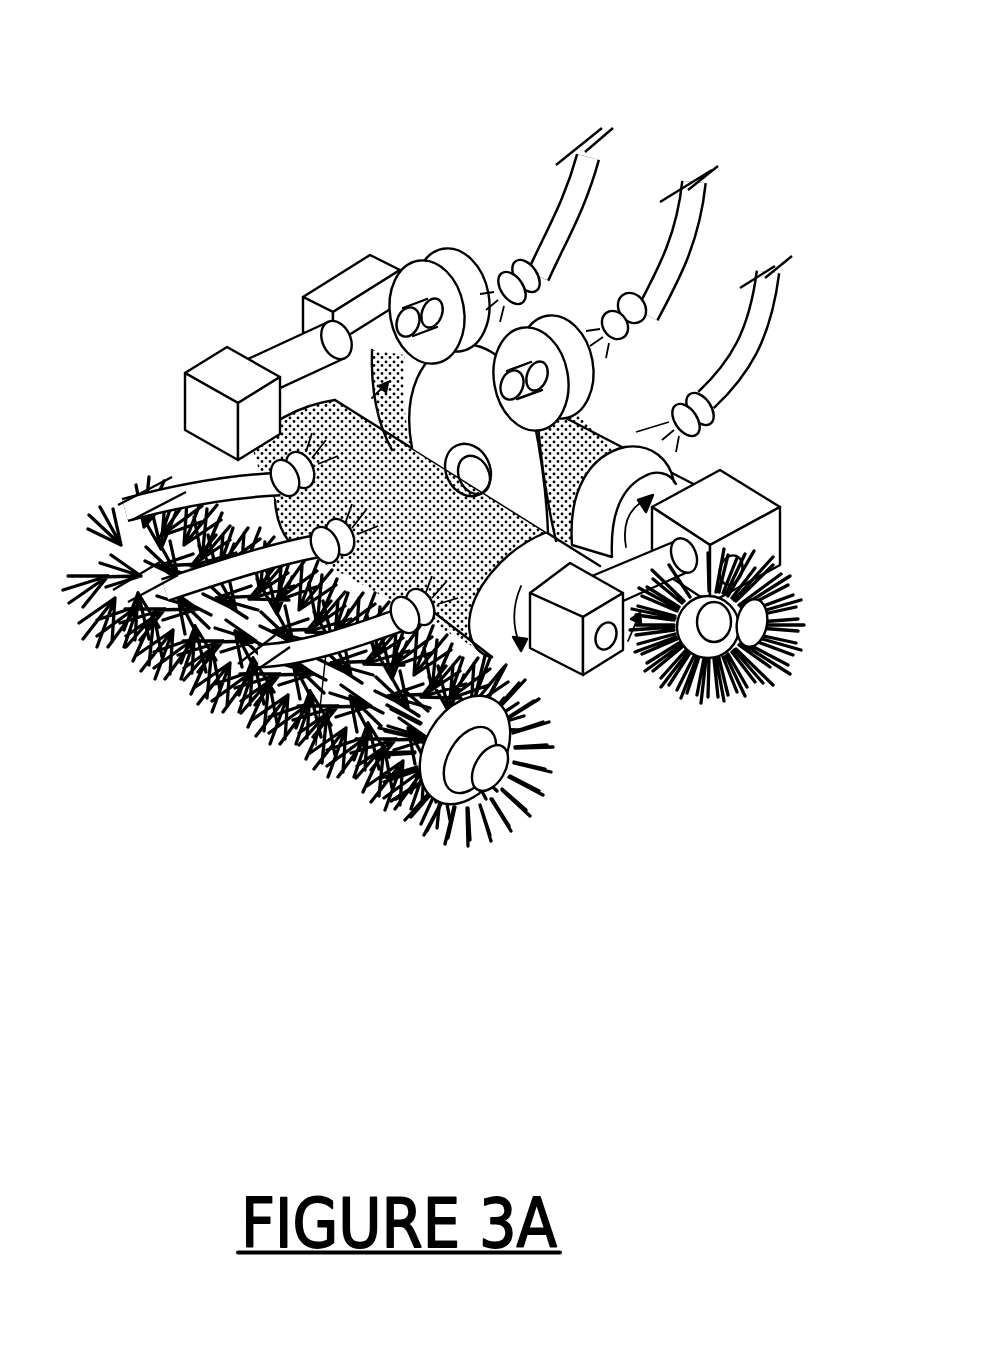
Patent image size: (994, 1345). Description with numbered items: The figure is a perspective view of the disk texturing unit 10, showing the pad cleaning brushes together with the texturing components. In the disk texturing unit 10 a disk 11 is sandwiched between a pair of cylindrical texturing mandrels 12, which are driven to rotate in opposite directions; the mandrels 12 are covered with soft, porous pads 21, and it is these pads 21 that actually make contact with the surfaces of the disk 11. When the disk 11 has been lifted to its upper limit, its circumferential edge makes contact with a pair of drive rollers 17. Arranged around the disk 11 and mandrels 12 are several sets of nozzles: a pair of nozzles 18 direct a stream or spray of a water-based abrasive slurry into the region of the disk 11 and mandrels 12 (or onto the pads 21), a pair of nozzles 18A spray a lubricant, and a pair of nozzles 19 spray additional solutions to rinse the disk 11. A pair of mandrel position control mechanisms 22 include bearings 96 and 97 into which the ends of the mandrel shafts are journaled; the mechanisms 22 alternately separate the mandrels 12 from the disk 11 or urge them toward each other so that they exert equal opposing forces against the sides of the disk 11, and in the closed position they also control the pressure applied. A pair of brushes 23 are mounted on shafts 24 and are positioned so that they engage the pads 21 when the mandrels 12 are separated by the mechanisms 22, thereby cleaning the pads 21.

The disk texturing unit 10 is at (233, 88).
The disk 11 is at (327, 268).
The cylindrical texturing mandrels 12 is at (248, 475).
The drive rollers 17 is at (538, 322).
The nozzles 18 is at (602, 177).
The nozzles 18A is at (782, 300).
The nozzles 19 is at (703, 235).
The pads 21 is at (246, 470).
The mandrel position control mechanisms 22 is at (368, 252).
The brushes 23 is at (350, 775).
The shafts 24 is at (455, 772).
The bearings 96 is at (337, 268).
The bearings 97 is at (222, 344).